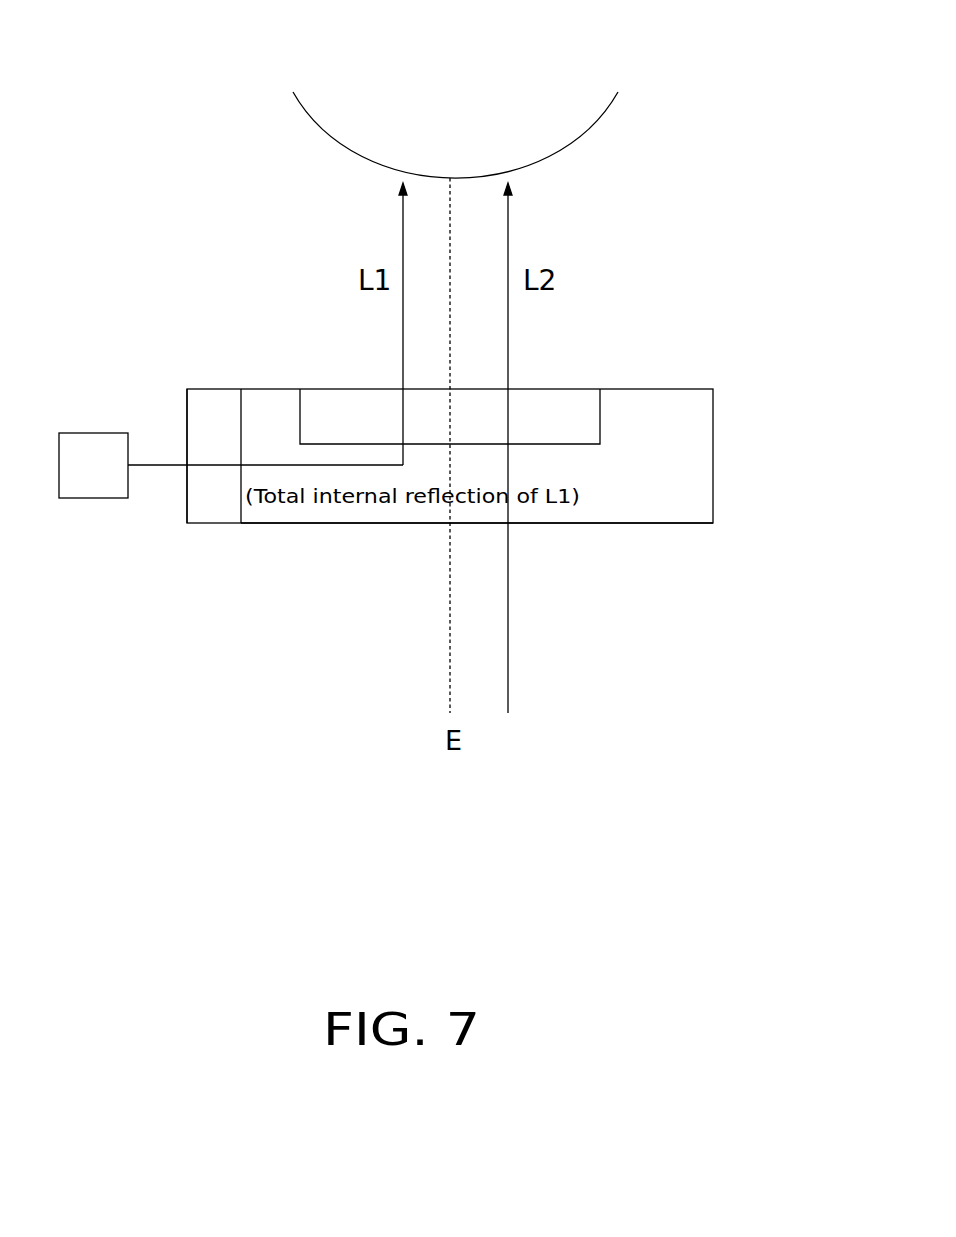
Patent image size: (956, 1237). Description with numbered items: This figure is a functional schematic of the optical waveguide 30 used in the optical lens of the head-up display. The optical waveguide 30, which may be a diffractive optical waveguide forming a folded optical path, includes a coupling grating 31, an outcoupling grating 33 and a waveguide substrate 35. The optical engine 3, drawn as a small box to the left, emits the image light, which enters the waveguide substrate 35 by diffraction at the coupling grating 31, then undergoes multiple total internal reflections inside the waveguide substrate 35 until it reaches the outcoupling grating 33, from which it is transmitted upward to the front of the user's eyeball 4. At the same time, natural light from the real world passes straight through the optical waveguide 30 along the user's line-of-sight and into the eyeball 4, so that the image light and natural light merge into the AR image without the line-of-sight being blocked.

The optical engine 3 is at (92, 440).
The eyeball 4 is at (605, 127).
The optical waveguide 30 is at (687, 461).
The coupling grating 31 is at (207, 505).
The outcoupling grating 33 is at (567, 400).
The waveguide substrate 35 is at (680, 496).